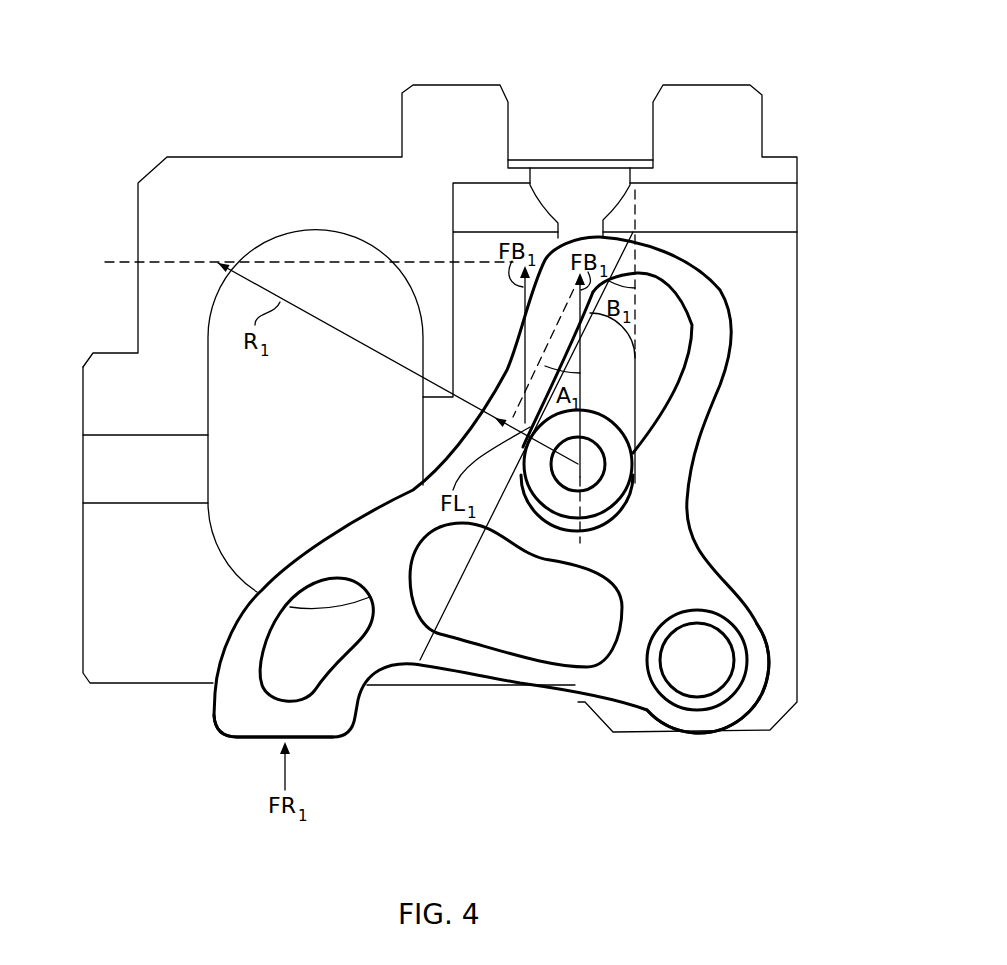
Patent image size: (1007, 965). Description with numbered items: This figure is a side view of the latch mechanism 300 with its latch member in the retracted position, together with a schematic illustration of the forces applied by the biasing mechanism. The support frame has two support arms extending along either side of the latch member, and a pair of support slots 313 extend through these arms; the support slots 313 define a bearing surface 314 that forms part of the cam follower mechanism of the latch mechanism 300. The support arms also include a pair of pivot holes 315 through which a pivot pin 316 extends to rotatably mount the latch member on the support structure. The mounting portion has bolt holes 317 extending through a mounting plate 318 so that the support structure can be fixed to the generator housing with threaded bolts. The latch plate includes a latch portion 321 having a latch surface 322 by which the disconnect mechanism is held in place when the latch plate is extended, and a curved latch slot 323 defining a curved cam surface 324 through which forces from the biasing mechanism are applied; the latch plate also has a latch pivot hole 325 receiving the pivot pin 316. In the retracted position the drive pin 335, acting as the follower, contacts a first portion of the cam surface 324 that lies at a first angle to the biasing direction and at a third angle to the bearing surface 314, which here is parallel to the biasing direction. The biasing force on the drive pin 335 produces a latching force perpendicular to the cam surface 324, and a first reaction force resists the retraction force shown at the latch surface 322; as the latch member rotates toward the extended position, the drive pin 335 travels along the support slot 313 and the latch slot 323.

The latch mechanism 300 is at (248, 106).
The support slot 313 is at (617, 326).
The bearing surface 314 is at (637, 360).
The pivot hole 315 is at (733, 657).
The pivot pin 316 is at (697, 660).
The bolt hole 317 is at (110, 503).
The mounting plate 318 is at (115, 405).
The latch portion 321 is at (348, 762).
The latch surface 322 is at (235, 740).
The curved latch slot 323 is at (667, 418).
The curved cam surface 324 is at (553, 395).
The latch pivot hole 325 is at (650, 687).
The drive pin 335 is at (585, 477).